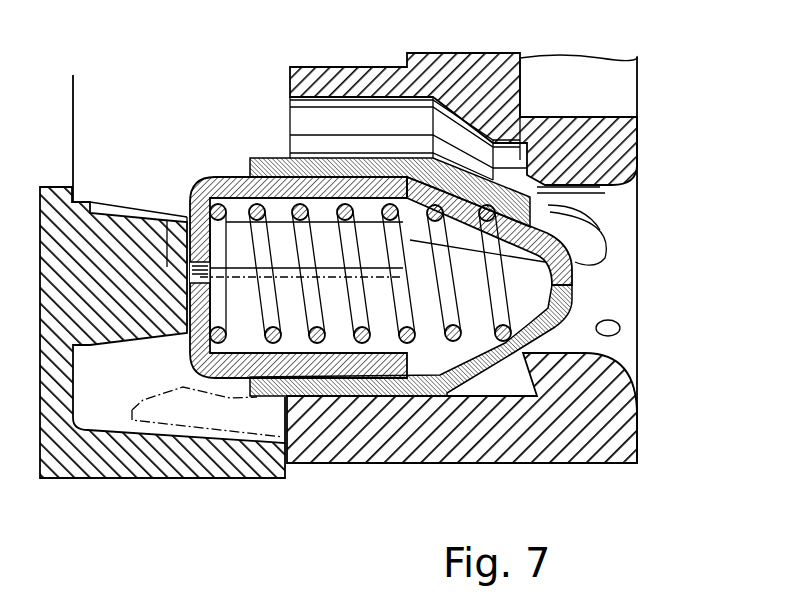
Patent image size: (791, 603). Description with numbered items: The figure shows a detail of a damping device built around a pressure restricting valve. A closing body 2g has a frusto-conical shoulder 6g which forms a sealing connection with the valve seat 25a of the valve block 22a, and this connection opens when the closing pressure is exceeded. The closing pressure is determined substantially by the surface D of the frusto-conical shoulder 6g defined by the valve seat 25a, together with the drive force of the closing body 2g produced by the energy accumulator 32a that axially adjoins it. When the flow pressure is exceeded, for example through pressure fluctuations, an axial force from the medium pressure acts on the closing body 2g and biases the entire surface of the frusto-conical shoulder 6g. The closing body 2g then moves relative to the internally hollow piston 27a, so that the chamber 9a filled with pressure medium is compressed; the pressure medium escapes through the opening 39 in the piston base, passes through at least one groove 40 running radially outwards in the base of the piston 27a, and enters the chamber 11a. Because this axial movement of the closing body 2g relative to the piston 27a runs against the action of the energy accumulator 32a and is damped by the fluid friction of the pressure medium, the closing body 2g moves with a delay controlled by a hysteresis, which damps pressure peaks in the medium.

The closing body 2g is at (328, 157).
The frusto-conical shoulder 6g is at (560, 213).
The chamber 9a is at (280, 233).
The chamber 11a is at (105, 403).
The valve block 22a is at (637, 417).
The valve seat 25a is at (597, 200).
The piston 27a is at (233, 185).
The energy accumulator 32a is at (270, 377).
The opening 39 is at (163, 218).
The groove 40 is at (187, 337).
The surface D is at (573, 267).